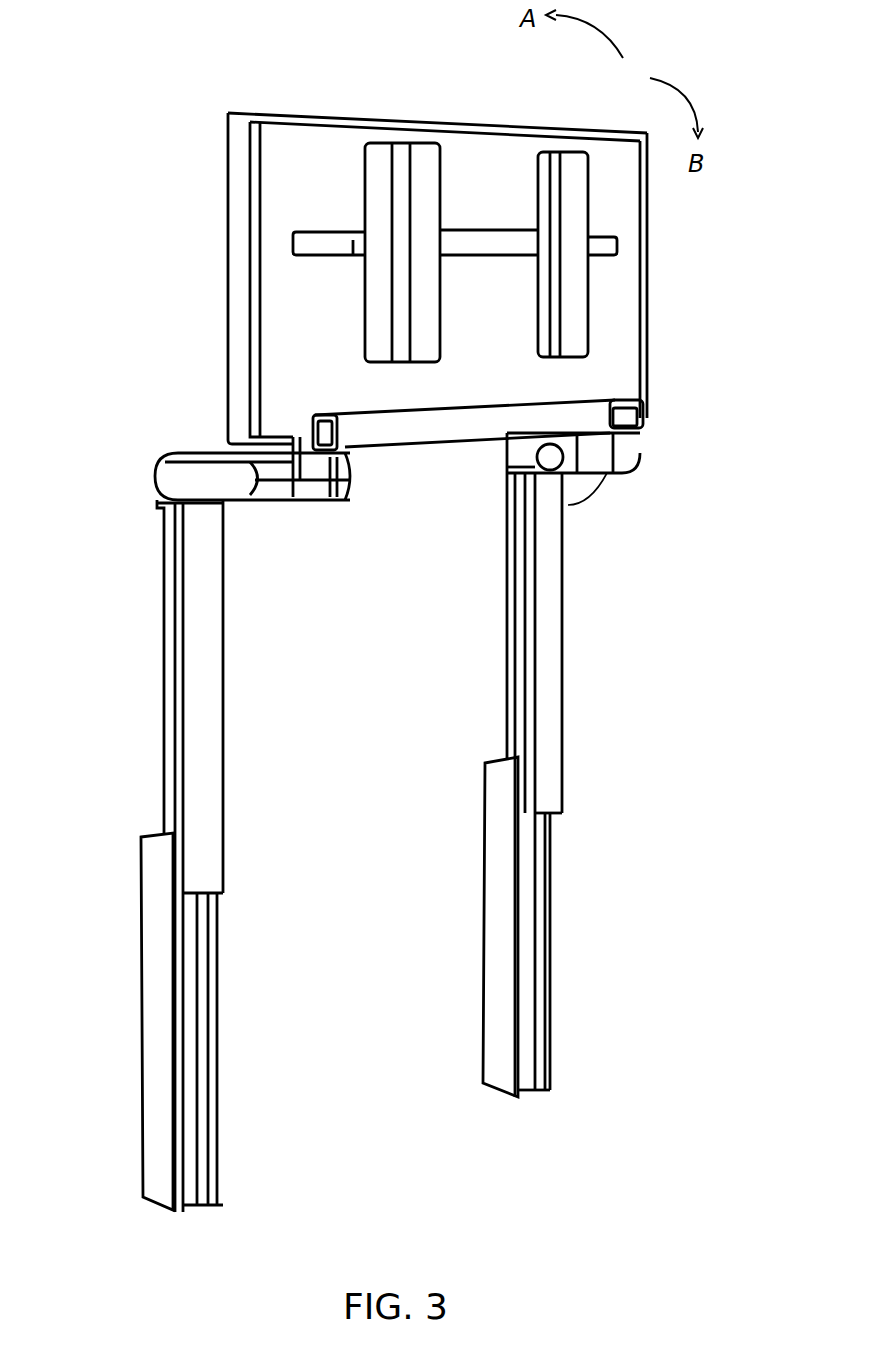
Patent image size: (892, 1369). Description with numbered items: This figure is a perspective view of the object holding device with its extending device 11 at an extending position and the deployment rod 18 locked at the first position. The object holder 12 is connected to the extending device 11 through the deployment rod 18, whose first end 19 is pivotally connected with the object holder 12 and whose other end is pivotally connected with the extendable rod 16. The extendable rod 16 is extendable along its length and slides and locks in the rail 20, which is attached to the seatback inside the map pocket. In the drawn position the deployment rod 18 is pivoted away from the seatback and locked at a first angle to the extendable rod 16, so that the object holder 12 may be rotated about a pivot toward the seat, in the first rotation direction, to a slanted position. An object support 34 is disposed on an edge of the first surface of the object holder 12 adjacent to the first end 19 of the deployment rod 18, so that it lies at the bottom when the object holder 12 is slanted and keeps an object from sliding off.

The extending device 11 is at (170, 673).
The object holder 12 is at (590, 373).
The extendable rod 16 is at (543, 640).
The deployment rod 18 is at (224, 494).
The first end 19 is at (240, 483).
The rail 20 is at (507, 912).
The object support 34 is at (340, 410).